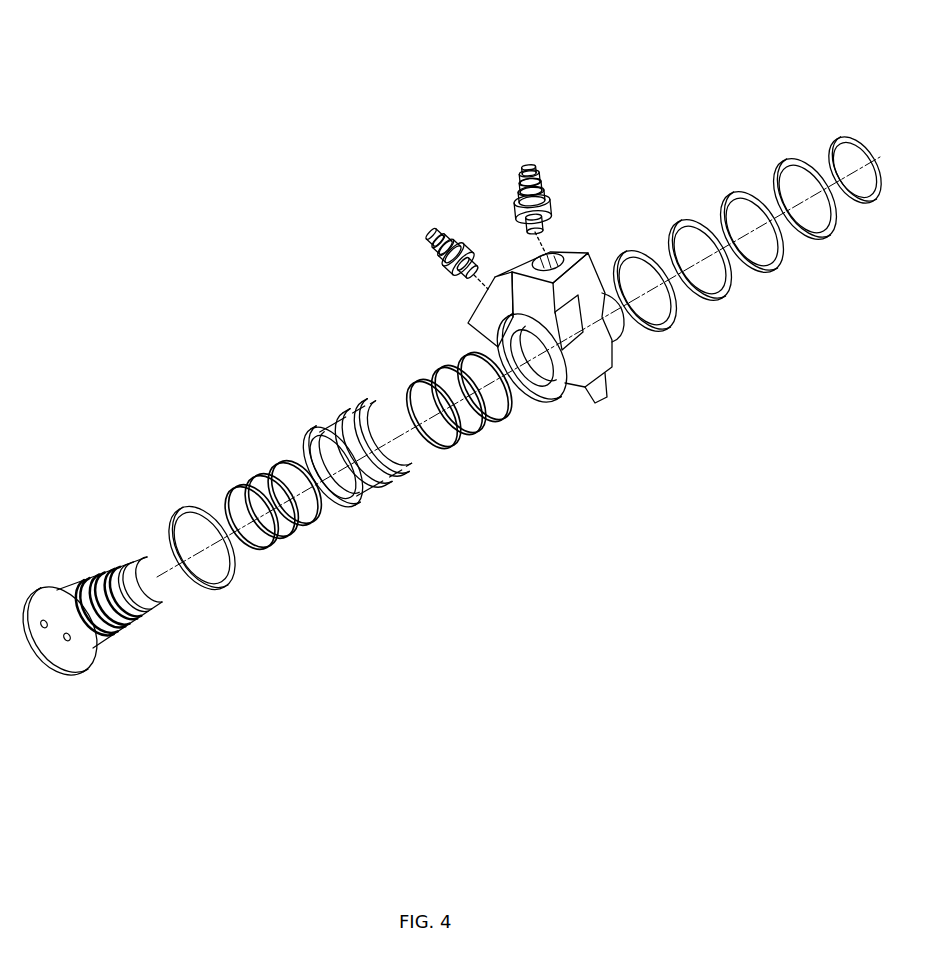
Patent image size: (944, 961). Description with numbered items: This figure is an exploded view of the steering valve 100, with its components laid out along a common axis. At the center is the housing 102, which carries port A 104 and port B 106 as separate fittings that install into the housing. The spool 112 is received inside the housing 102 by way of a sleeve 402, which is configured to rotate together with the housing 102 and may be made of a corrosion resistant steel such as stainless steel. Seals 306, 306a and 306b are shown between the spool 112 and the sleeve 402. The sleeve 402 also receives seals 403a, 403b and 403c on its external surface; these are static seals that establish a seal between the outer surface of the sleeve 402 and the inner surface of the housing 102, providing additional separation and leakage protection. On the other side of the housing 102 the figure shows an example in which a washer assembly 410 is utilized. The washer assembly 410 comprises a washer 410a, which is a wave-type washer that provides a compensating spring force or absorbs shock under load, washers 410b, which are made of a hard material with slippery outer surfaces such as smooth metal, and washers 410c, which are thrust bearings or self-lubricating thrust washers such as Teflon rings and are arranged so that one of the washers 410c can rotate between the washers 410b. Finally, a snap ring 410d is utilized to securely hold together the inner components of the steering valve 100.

The steering valve 100 is at (210, 115).
The housing 102 is at (625, 342).
The port A 104 is at (552, 200).
The port B 106 is at (420, 238).
The spool 112 is at (80, 650).
The seal 306 is at (223, 462).
The seal 306a is at (228, 482).
The seal 306b is at (280, 452).
The sleeve 402 is at (393, 462).
The seal 403a is at (402, 385).
The seal 403b is at (430, 358).
The seal 403c is at (452, 347).
The washer assembly 410 is at (170, 507).
The washer 410a is at (675, 328).
The washers 410b is at (729, 305).
The washers 410c is at (232, 578).
The snap ring 410d is at (868, 206).